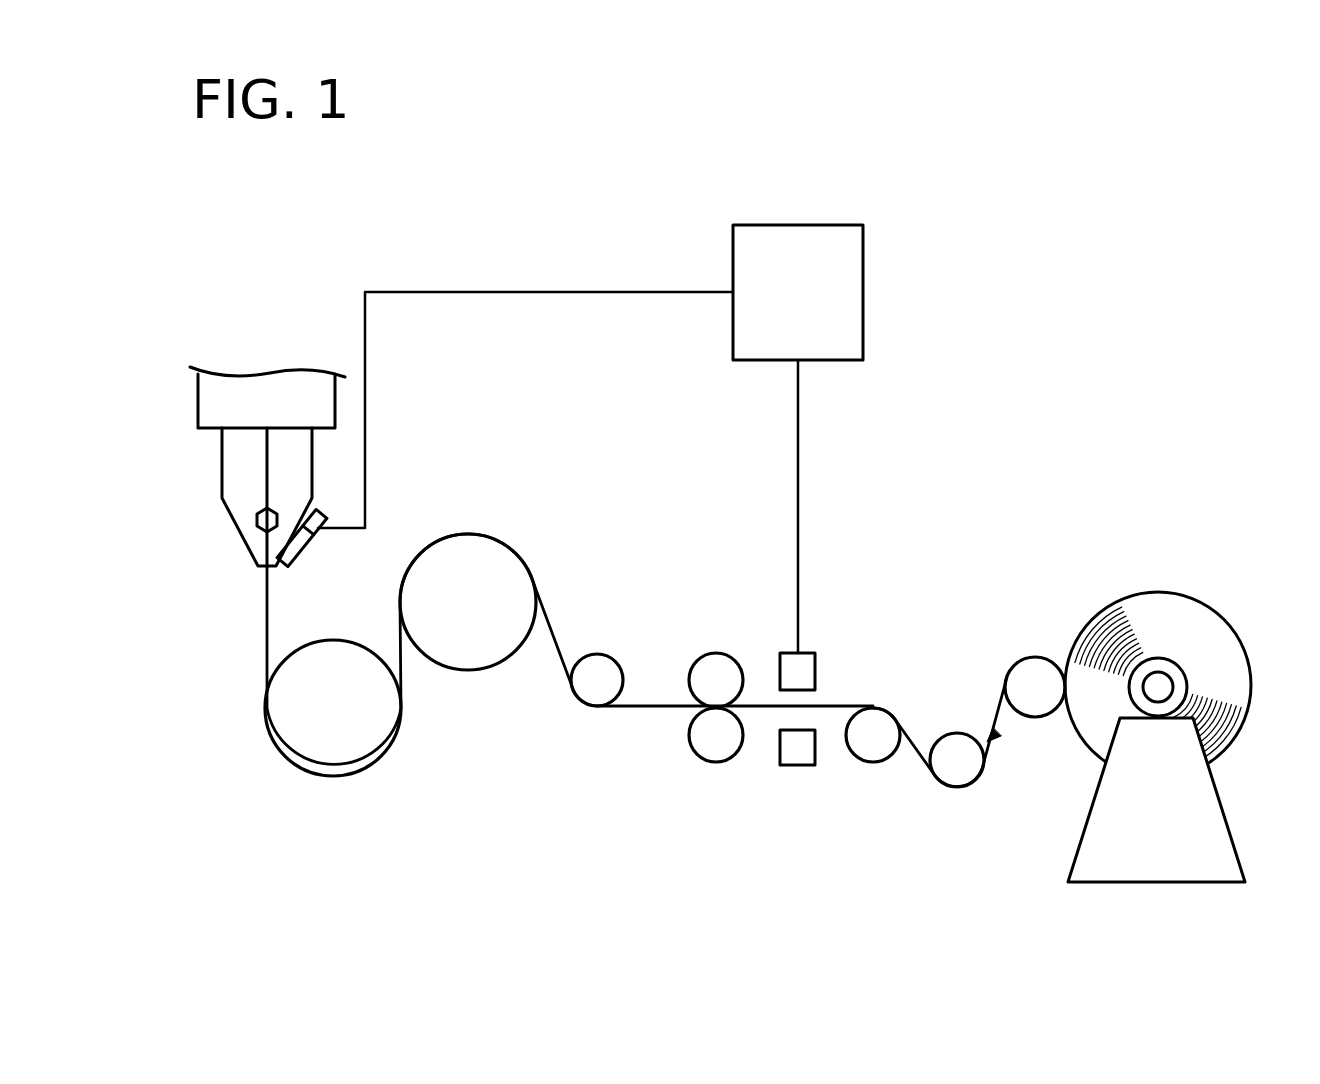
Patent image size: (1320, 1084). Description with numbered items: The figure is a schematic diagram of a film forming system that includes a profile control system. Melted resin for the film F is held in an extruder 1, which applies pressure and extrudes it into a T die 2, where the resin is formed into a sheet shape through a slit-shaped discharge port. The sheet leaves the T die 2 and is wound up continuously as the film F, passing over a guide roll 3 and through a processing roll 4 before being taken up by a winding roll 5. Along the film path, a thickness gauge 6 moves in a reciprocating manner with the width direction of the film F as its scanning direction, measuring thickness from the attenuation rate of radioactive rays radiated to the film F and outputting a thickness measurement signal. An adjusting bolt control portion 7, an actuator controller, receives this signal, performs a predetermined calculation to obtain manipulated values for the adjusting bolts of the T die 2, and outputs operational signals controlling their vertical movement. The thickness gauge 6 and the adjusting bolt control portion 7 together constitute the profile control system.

The extruder 1 is at (229, 393).
The T die 2 is at (237, 504).
The film F is at (263, 633).
The guide roll 3 is at (366, 771).
The processing roll 4 is at (710, 763).
The winding roll 5 is at (1157, 589).
The thickness gauge 6 is at (806, 651).
The adjusting bolt control portion 7 is at (864, 296).